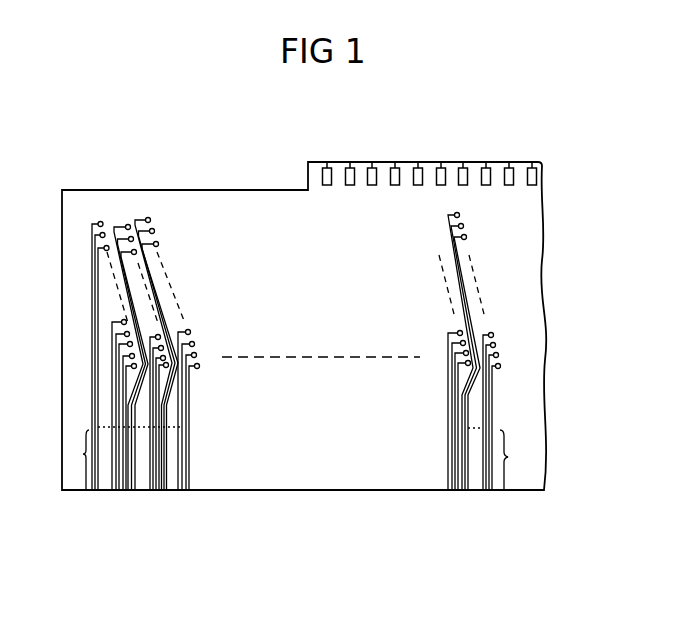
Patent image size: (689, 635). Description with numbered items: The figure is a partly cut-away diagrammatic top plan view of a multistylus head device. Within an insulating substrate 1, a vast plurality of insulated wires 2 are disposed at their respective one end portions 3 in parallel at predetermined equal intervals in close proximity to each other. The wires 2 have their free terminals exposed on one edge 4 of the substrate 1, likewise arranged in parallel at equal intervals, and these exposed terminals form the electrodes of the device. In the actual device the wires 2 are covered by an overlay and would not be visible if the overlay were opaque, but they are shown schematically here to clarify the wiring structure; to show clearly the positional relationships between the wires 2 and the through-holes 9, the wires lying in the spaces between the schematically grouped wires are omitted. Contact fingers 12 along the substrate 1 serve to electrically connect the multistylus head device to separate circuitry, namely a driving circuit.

The insulating substrate 1 is at (542, 223).
The contact fingers 12 is at (442, 173).
The insulated wires 2 is at (92, 372).
The through-holes 9 is at (126, 223).
The edge of the substrate 4 is at (157, 490).
The one end portions 3 is at (83, 454).